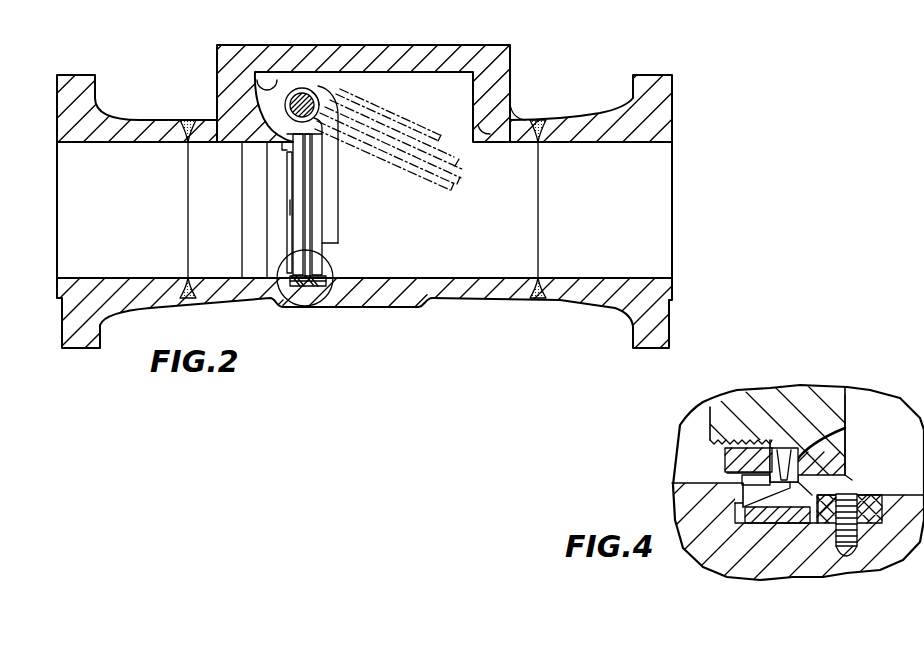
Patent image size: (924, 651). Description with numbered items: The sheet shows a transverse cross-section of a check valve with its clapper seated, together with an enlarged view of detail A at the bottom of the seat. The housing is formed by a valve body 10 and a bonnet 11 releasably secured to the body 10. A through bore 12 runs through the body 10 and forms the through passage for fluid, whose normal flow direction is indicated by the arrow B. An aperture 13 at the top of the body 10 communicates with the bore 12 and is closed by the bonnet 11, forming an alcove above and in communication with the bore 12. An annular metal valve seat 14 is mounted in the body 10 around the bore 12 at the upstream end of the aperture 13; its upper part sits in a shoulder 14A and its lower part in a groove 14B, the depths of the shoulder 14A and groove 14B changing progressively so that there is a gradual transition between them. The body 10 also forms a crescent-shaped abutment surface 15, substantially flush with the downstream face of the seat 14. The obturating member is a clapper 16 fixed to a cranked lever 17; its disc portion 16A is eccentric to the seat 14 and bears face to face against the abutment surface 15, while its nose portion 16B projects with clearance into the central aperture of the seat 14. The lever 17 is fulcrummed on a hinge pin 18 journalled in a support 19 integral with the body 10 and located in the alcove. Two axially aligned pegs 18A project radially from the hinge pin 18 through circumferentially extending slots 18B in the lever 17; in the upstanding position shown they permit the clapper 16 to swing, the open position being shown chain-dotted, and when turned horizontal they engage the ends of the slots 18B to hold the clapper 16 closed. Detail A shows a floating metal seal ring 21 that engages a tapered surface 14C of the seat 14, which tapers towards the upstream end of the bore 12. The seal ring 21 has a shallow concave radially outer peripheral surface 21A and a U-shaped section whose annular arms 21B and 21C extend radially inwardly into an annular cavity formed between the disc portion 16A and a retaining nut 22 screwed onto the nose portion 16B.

In FIG. 2, the valve body 10 is at (494, 288).
In FIG. 2, the bonnet 11 is at (448, 58).
In FIG. 2, the through bore 12 is at (540, 122).
In FIG. 2, the aperture 13 is at (512, 112).
In FIG. 2, the annular metal valve seat 14 is at (290, 138).
In FIG. 4, the annular metal valve seat 14 is at (782, 515).
In FIG. 2, the shoulder 14A is at (280, 144).
In FIG. 4, the groove 14B is at (774, 528).
In FIG. 4, the tapered surface 14C is at (805, 512).
In FIG. 2, the abutment surface 15 is at (288, 128).
In FIG. 2, the clapper 16 is at (282, 190).
In FIG. 2, the disc portion 16A is at (312, 221).
In FIG. 4, the disc portion 16A is at (832, 456).
In FIG. 2, the nose portion 16B is at (290, 238).
In FIG. 4, the nose portion 16B is at (723, 421).
In FIG. 2, the lever 17 is at (334, 189).
In FIG. 2, the hinge pin 18 is at (316, 103).
In FIG. 2, the pegs 18A is at (303, 88).
In FIG. 2, the slots 18B is at (320, 92).
In FIG. 2, the support 19 is at (287, 94).
In FIG. 2, the floating metal seal ring 21 is at (292, 211).
In FIG. 4, the floating metal seal ring 21 is at (746, 505).
In FIG. 4, the radially outer peripheral surface 21A is at (808, 483).
In FIG. 4, the annular arm 21B is at (845, 427).
In FIG. 4, the annular arm 21C is at (780, 450).
In FIG. 4, the retaining nut 22 is at (727, 458).
In FIG. 2, the detail A is at (334, 272).
In FIG. 2, the arrow B is at (125, 210).